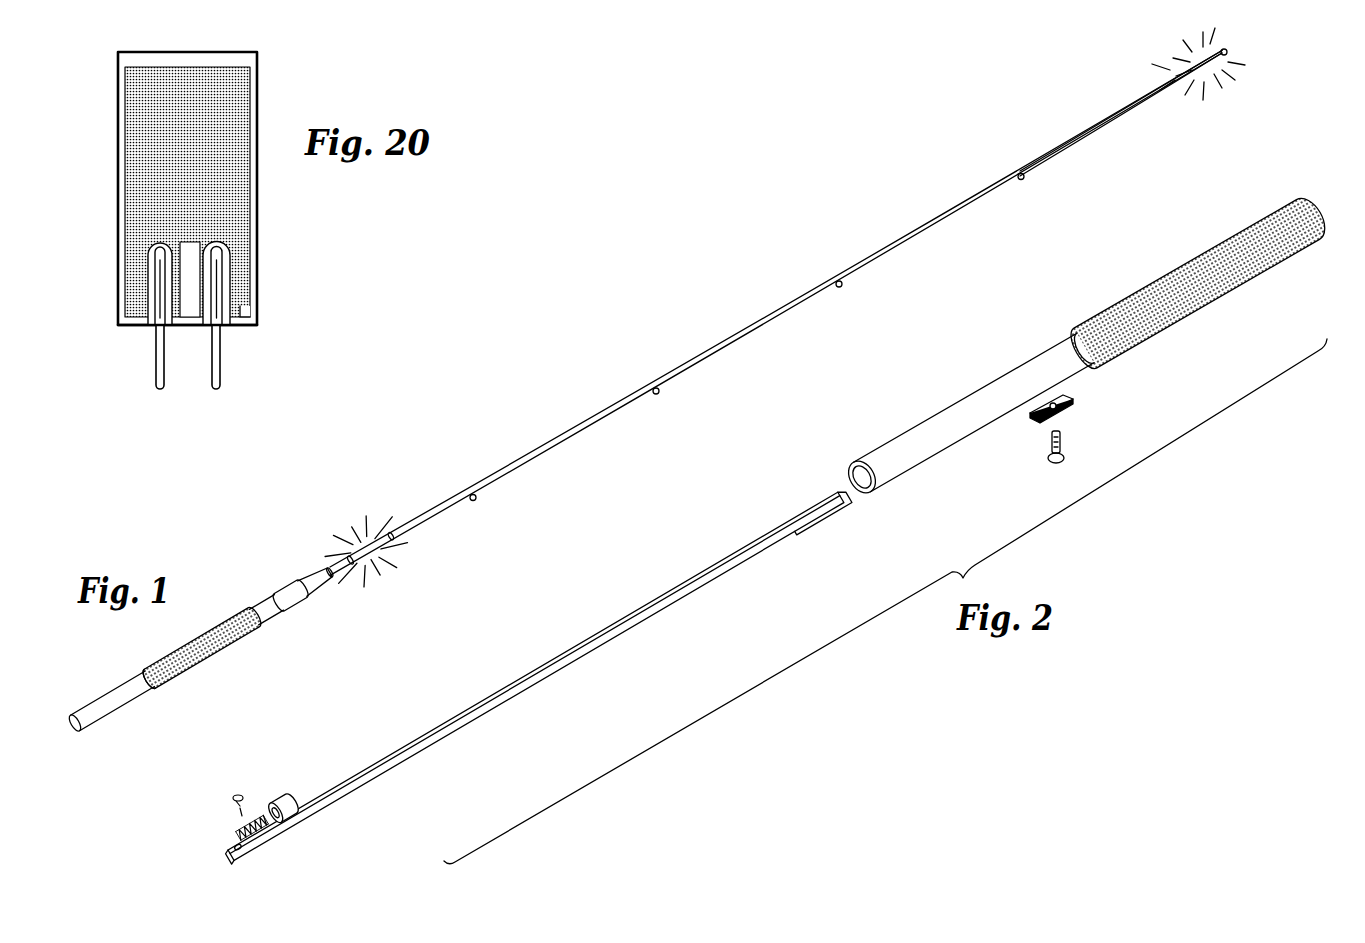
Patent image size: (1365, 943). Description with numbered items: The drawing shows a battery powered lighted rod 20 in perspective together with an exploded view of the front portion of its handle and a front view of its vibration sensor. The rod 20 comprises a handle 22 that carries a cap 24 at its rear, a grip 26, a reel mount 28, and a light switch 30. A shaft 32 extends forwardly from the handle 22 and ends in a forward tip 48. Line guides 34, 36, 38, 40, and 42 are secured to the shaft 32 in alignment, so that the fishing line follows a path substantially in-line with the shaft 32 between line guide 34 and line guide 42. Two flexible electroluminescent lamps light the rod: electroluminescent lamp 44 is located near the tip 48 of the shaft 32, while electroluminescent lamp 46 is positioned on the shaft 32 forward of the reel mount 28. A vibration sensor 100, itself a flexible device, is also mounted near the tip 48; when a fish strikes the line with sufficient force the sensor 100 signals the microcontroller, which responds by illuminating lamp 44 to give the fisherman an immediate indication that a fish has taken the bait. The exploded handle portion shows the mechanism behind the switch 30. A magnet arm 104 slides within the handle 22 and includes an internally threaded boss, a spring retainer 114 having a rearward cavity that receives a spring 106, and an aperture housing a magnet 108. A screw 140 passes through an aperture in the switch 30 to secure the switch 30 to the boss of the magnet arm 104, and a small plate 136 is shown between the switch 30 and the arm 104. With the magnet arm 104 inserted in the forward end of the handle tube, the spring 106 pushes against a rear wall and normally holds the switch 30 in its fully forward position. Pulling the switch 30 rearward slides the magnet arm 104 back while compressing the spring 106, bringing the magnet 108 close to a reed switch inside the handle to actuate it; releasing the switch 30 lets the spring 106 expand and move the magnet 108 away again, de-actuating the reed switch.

In FIG. 1, the battery powered lighted rod 20 is at (816, 313).
In FIG. 1, the handle 22 is at (192, 673).
In FIG. 2, the handle 22 is at (1086, 348).
In FIG. 1, the cap 24 is at (66, 759).
In FIG. 1, the grip 26 is at (201, 647).
In FIG. 2, the grip 26 is at (1125, 284).
In FIG. 1, the reel mount 28 is at (290, 595).
In FIG. 2, the light switch 30 is at (968, 415).
In FIG. 1, the shaft 32 is at (1075, 130).
In FIG. 1, the line guide 34 is at (477, 500).
In FIG. 1, the line guide 36 is at (660, 393).
In FIG. 1, the line guide 38 is at (843, 287).
In FIG. 1, the line guide 40 is at (1025, 178).
In FIG. 1, the line guide 42 is at (1232, 53).
In FIG. 1, the electroluminescent lamp 44 is at (1172, 60).
In FIG. 1, the electroluminescent lamp 46 is at (372, 560).
In FIG. 1, the forward tip 48 is at (1228, 50).
In FIG. 20, the vibration sensor 100 is at (258, 210).
In FIG. 2, the magnet arm 104 is at (498, 669).
In FIG. 2, the spring 106 is at (238, 846).
In FIG. 2, the magnet 108 is at (252, 827).
In FIG. 2, the spring retainer 114 is at (283, 808).
In FIG. 2, the key plate 136 is at (1070, 415).
In FIG. 2, the screw 140 is at (1050, 458).